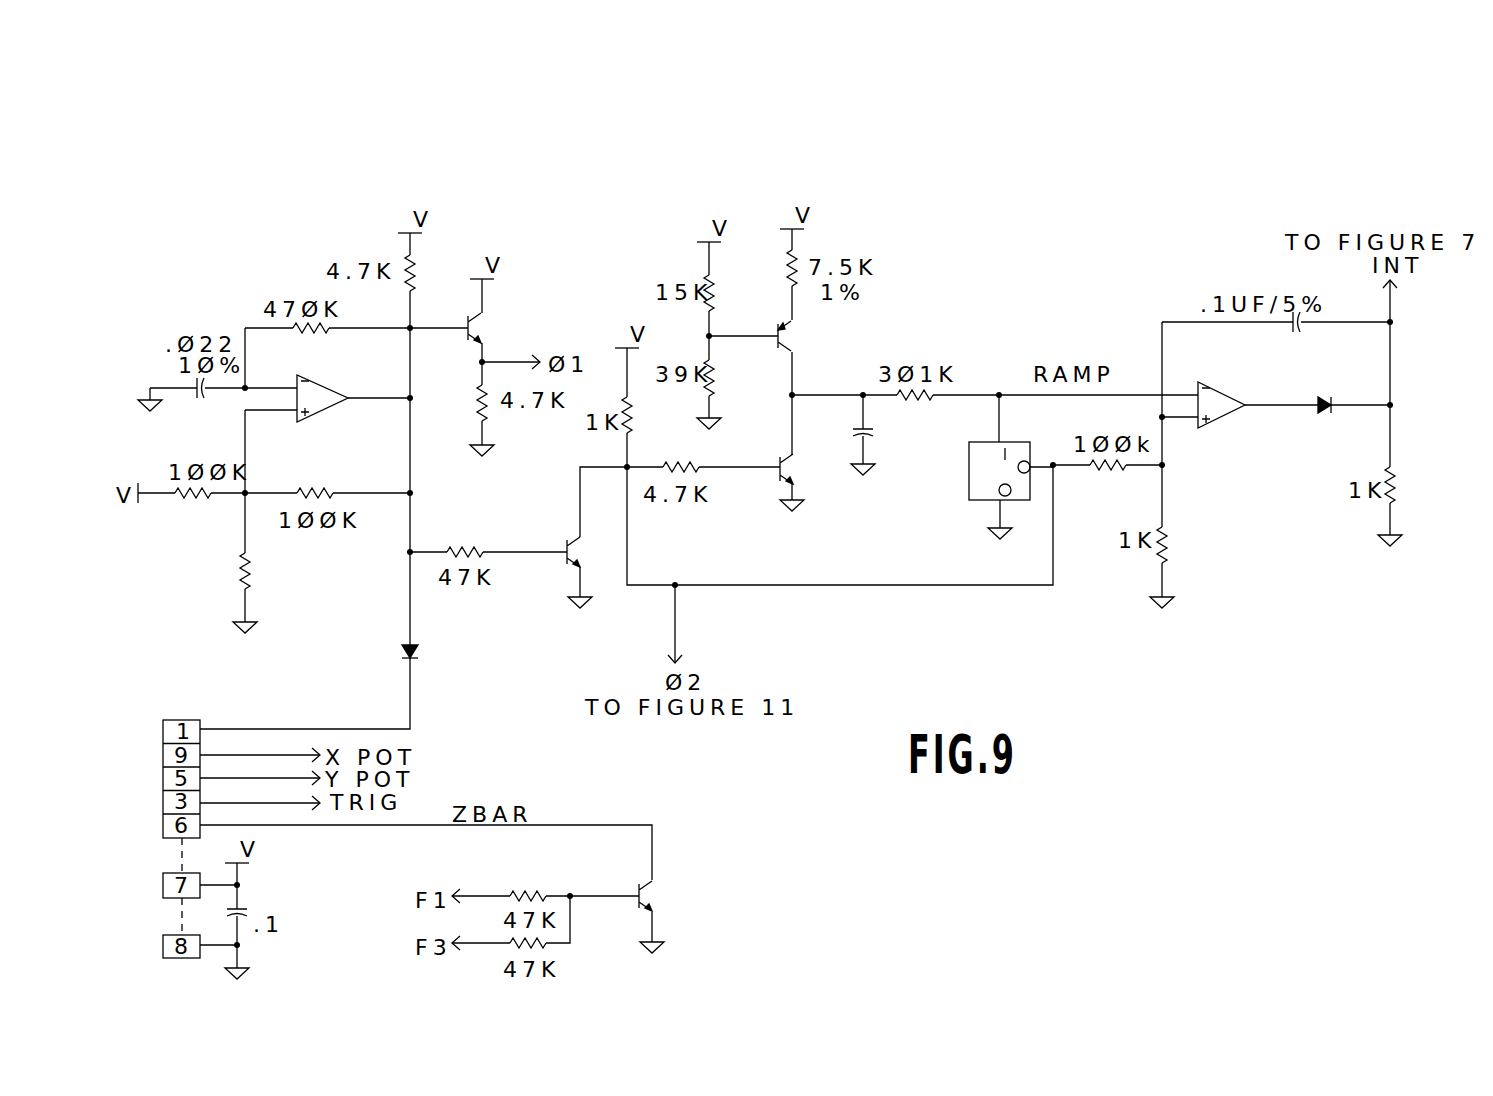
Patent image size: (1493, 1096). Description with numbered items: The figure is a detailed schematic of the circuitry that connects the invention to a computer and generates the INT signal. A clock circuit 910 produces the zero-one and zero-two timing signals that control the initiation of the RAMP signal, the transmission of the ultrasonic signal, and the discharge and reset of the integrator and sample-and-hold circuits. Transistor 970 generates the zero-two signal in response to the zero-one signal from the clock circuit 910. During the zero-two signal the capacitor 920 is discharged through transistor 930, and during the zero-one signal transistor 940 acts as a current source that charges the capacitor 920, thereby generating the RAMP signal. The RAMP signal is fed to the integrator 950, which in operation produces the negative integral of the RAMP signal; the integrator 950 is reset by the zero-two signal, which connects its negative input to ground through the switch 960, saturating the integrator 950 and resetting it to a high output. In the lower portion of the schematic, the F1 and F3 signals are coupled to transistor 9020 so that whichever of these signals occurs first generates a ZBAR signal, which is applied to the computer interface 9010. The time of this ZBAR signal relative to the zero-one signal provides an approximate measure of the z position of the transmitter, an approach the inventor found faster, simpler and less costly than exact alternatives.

The clock circuit 910 is at (305, 348).
The computer interface 9010 is at (200, 596).
The transistor 970 is at (552, 563).
The transistor 940 is at (823, 336).
The transistor 930 is at (770, 453).
The capacitor 920 is at (900, 443).
The switch 960 is at (983, 472).
The integrator 950 is at (1244, 420).
The transistor 9020 is at (695, 917).